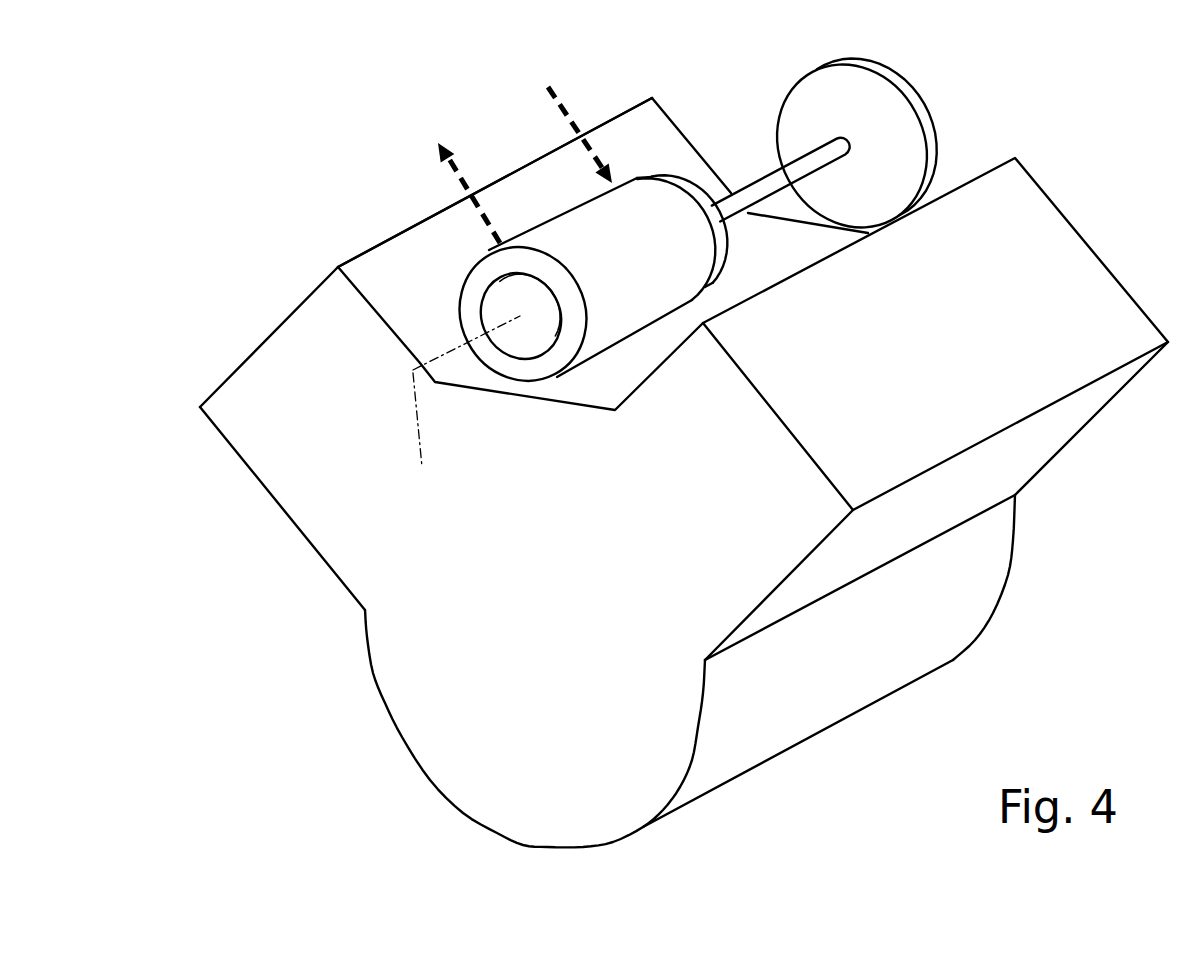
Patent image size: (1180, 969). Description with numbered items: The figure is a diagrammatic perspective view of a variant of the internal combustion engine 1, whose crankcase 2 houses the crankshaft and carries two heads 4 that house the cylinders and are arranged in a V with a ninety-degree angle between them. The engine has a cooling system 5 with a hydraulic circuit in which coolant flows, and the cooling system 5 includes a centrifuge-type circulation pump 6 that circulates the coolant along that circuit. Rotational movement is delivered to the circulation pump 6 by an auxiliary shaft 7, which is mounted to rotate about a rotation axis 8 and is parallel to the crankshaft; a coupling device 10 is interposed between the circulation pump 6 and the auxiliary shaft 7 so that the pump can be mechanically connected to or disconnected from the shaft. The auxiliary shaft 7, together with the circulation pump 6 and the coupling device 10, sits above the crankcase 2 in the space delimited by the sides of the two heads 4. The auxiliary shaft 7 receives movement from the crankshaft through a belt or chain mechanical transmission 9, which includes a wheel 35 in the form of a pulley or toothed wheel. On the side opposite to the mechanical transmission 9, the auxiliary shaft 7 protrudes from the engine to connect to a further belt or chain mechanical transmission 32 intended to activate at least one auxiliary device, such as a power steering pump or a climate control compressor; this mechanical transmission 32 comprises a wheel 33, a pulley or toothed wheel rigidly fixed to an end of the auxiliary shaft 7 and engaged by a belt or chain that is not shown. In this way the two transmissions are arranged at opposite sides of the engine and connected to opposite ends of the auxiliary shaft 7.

The internal combustion engine 1 is at (250, 720).
The crankcase 2 is at (472, 767).
The heads 4 is at (285, 360).
The cooling system 5 is at (400, 100).
The circulation pump 6 is at (531, 190).
The auxiliary shaft 7 is at (767, 187).
The rotation axis 8 is at (466, 405).
The mechanical belt transmission 9 is at (960, 94).
The coupling device 10 is at (666, 157).
The mechanical transmission 32 is at (400, 192).
The wheel 33 is at (505, 303).
The wheel 35 is at (817, 103).